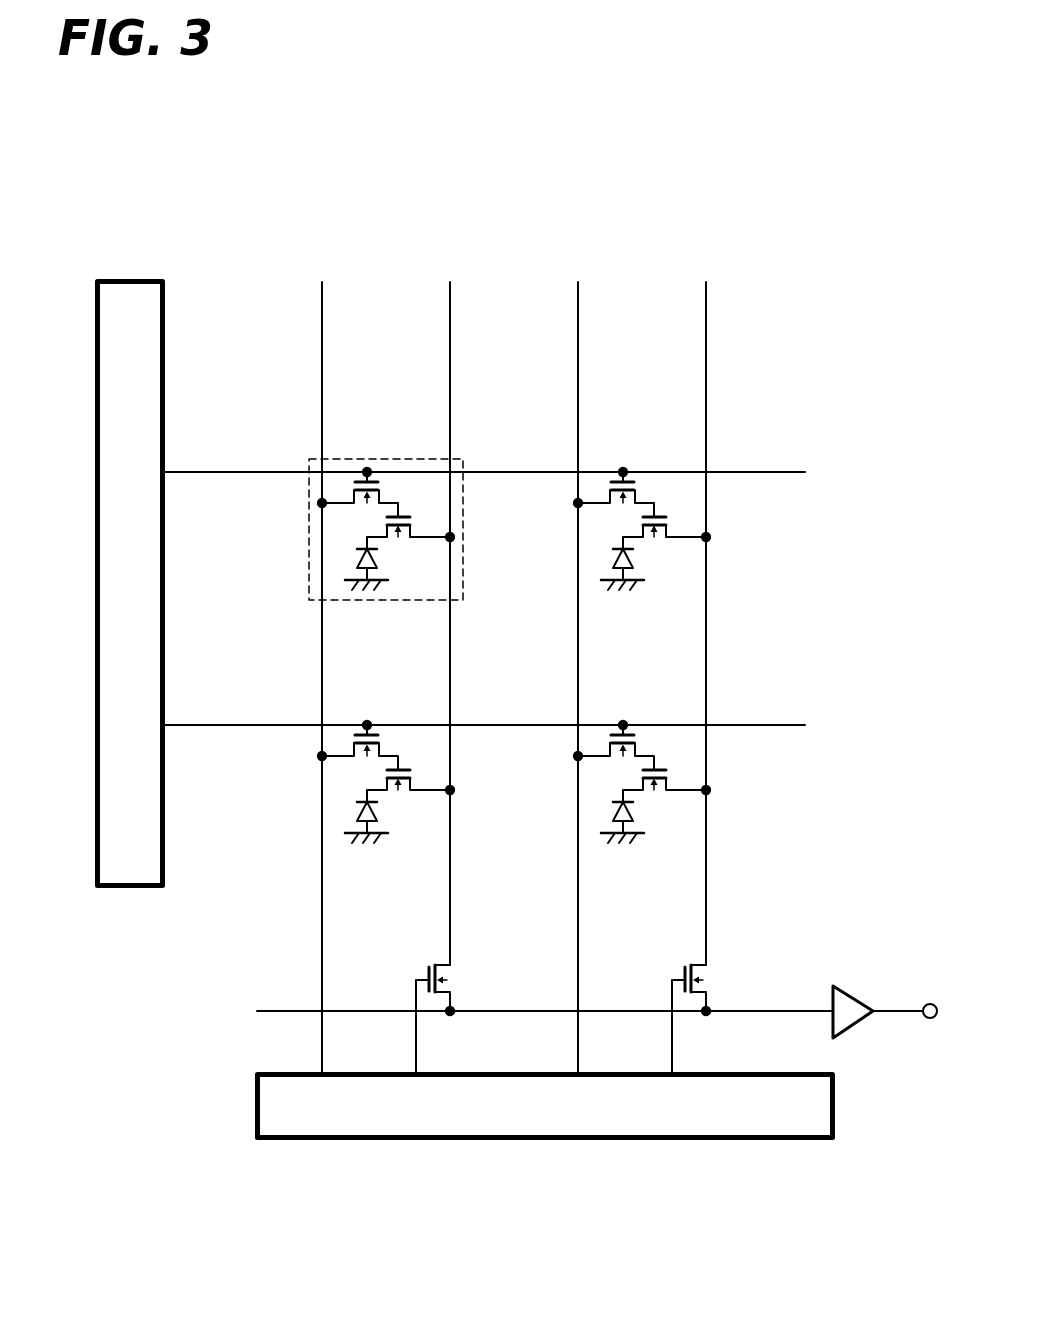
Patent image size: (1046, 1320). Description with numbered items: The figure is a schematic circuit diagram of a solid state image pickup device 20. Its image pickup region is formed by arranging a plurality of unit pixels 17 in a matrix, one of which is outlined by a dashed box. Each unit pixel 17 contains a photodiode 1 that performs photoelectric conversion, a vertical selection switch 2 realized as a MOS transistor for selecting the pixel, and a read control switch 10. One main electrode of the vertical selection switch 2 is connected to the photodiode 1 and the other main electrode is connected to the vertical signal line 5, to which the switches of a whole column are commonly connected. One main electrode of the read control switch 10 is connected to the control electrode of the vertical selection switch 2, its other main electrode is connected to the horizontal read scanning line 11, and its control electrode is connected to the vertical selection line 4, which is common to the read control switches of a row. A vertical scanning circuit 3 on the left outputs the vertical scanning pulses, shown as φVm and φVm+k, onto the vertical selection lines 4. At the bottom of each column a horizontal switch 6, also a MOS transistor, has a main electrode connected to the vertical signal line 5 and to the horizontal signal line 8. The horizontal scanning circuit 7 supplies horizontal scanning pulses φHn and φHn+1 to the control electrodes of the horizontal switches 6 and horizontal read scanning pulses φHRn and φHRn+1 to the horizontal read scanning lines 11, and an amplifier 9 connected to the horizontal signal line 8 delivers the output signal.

The photodiode 1 is at (487, 694).
The vertical selection switch 2 is at (539, 684).
The vertical scanning circuit 3 is at (129, 278).
The vertical selection line 4 is at (289, 469).
The vertical signal line 5 is at (451, 346).
The horizontal switch 6 is at (466, 979).
The horizontal scanning circuit 7 is at (706, 1143).
The horizontal signal line 8 is at (800, 1008).
The amplifier 9 is at (852, 988).
The read control switch 10 is at (506, 619).
The horizontal read scanning line 11 is at (323, 345).
The unit pixel 17 is at (383, 457).
The solid state image pickup device 20 is at (848, 690).